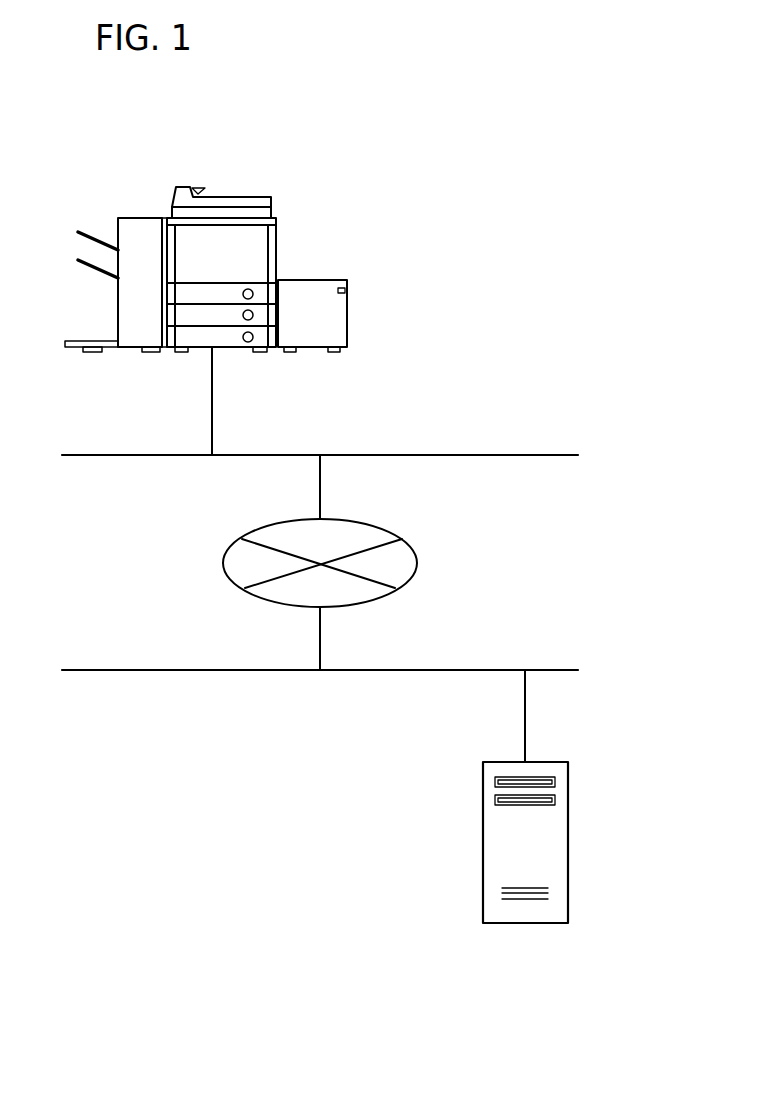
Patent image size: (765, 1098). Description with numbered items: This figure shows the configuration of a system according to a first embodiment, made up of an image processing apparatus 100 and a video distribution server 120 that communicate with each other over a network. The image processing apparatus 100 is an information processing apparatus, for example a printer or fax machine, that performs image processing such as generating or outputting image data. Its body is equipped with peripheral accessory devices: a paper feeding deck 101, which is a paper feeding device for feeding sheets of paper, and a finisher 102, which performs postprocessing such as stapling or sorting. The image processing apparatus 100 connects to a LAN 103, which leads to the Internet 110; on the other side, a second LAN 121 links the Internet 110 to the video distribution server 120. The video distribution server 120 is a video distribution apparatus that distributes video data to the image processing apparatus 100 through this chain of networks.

The image processing apparatus 100 is at (228, 197).
The paper feeding deck 101 is at (347, 300).
The finisher 102 is at (138, 218).
The LAN 103 is at (102, 455).
The Internet 110 is at (415, 550).
The video distribution server 120 is at (568, 792).
The LAN 121 is at (102, 670).